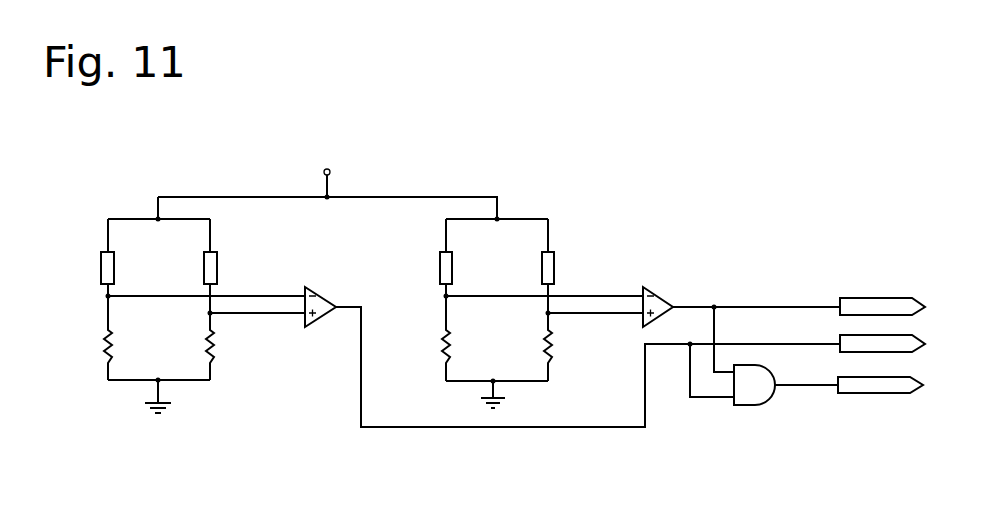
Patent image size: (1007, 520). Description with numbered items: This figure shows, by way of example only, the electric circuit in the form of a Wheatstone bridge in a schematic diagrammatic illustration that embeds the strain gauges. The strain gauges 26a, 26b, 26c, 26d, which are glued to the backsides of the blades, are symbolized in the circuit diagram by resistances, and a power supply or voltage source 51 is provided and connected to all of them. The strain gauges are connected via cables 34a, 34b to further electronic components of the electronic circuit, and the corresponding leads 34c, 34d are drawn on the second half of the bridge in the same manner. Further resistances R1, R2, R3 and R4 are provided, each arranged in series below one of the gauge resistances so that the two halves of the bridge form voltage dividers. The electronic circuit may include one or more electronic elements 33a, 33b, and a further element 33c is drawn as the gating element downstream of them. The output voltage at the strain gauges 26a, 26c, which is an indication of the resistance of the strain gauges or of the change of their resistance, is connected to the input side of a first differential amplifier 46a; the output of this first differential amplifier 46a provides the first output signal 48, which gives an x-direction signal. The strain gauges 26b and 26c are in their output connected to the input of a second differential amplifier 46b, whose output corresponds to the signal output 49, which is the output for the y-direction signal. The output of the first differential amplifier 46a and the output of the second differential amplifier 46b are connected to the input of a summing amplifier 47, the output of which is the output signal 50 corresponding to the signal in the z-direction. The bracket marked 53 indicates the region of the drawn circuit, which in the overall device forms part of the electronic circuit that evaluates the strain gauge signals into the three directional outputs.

The strain gauge 26a is at (100, 266).
The strain gauge 26b is at (440, 266).
The strain gauge 26c is at (218, 268).
The strain gauge 26d is at (556, 268).
The cable 34a is at (128, 218).
The cable 34b is at (195, 218).
The conductor lead 34c is at (472, 218).
The conductor lead 34d is at (535, 218).
The resistance R1 is at (97, 347).
The resistance R2 is at (224, 347).
The resistance R3 is at (428, 363).
The resistance R4 is at (560, 355).
The power supply/voltage source 51 is at (330, 188).
The evaluation circuit 53 is at (535, 136).
The electronic element 33a is at (318, 336).
The electronic element 33b is at (661, 280).
The AND gate 33c is at (745, 404).
The first differential amplifier 46a is at (327, 292).
The second differential amplifier 46b is at (672, 303).
The summing amplifier 47 is at (771, 402).
The first output signal 48 is at (918, 337).
The signal output 49 is at (925, 295).
The output signal 50 is at (915, 380).